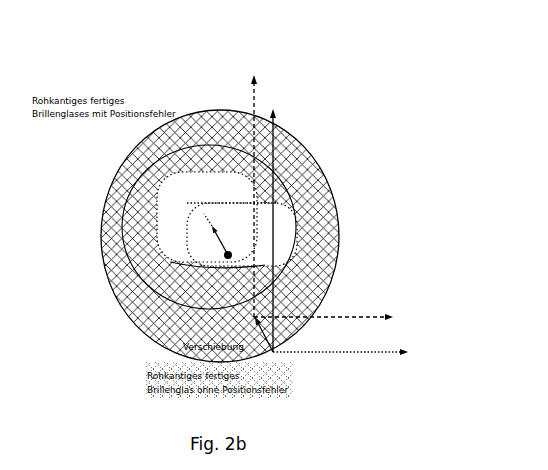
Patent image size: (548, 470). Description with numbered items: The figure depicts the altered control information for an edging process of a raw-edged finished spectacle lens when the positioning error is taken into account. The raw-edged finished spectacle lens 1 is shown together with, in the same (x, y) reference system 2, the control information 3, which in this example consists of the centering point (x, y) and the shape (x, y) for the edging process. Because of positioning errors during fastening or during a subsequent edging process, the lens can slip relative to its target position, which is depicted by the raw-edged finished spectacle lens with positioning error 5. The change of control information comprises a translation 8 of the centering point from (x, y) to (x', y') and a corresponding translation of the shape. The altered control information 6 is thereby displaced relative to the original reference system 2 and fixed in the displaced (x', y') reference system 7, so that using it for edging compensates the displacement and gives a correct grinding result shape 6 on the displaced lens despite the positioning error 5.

The raw-edged finished spectacle lens 1 is at (229, 236).
The (x, y) reference system 2 is at (341, 240).
The control information 3 is at (233, 260).
The raw-edged finished spectacle lens with positioning error 5 is at (220, 236).
The altered control information 6 is at (207, 217).
The coordinate system (x', y') 7 is at (324, 199).
The translation of the centering point 8 is at (204, 243).